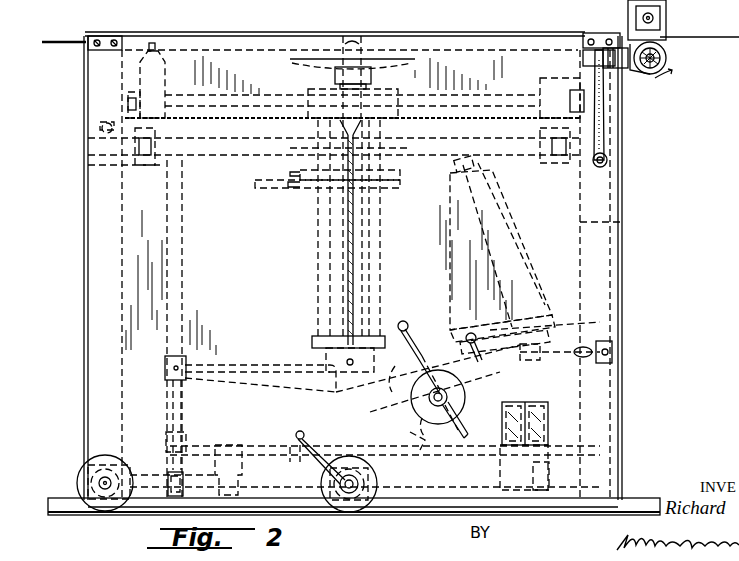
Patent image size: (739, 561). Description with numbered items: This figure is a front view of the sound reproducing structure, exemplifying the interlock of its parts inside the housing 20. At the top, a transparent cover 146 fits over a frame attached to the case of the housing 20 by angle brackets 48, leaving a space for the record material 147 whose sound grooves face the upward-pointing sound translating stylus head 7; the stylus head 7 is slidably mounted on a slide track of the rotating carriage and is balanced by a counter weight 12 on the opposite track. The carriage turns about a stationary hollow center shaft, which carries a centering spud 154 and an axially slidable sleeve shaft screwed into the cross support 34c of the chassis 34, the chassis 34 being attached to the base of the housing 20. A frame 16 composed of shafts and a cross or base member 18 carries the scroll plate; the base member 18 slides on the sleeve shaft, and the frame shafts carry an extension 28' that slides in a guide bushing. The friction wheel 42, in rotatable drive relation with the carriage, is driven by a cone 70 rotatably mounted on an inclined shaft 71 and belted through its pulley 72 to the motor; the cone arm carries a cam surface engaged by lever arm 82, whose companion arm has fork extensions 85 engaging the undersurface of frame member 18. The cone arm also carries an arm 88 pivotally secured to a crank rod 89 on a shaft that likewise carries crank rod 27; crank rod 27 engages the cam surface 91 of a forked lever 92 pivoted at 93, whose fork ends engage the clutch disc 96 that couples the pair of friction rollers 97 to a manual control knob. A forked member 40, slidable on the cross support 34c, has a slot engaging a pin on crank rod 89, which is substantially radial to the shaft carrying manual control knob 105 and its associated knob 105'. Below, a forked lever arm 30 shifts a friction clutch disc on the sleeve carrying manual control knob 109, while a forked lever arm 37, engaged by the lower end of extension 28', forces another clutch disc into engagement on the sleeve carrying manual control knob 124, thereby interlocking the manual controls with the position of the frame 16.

The sound translating stylus head 7 is at (160, 73).
The counter weight 12 is at (542, 82).
The frame 16 is at (178, 325).
The cross or base member 18 is at (268, 372).
The housing 20 is at (623, 393).
The crank rod 27 is at (600, 119).
The extension 28' is at (190, 413).
The forked lever arm 30 is at (470, 482).
The chassis 34 is at (243, 428).
The cross support 34c is at (321, 430).
The forked lever arm 37 is at (156, 482).
The forked member 40 is at (365, 452).
The friction wheel 42 is at (284, 200).
The angle brackets 48 is at (112, 45).
The cone 70 is at (510, 262).
The inclined shaft 71 is at (495, 303).
The pulley 72 is at (602, 322).
The lever arm 82 is at (447, 402).
The fork extensions 85 is at (410, 352).
The arm 88 is at (566, 358).
The crank rod 89 is at (624, 223).
The cam surface 91 is at (584, 58).
The forked lever 92 is at (628, 68).
The pivot 93 is at (608, 40).
The clutch disc 96 is at (668, 65).
The friction rollers 97 is at (668, 57).
The manual control knob 105 is at (421, 478).
The lever 105' is at (453, 340).
The manual control knob 109 is at (349, 512).
The manual control knob 124 is at (108, 508).
The cover 146 is at (427, 36).
The record material 147 is at (58, 41).
The centering spud 154 is at (372, 22).